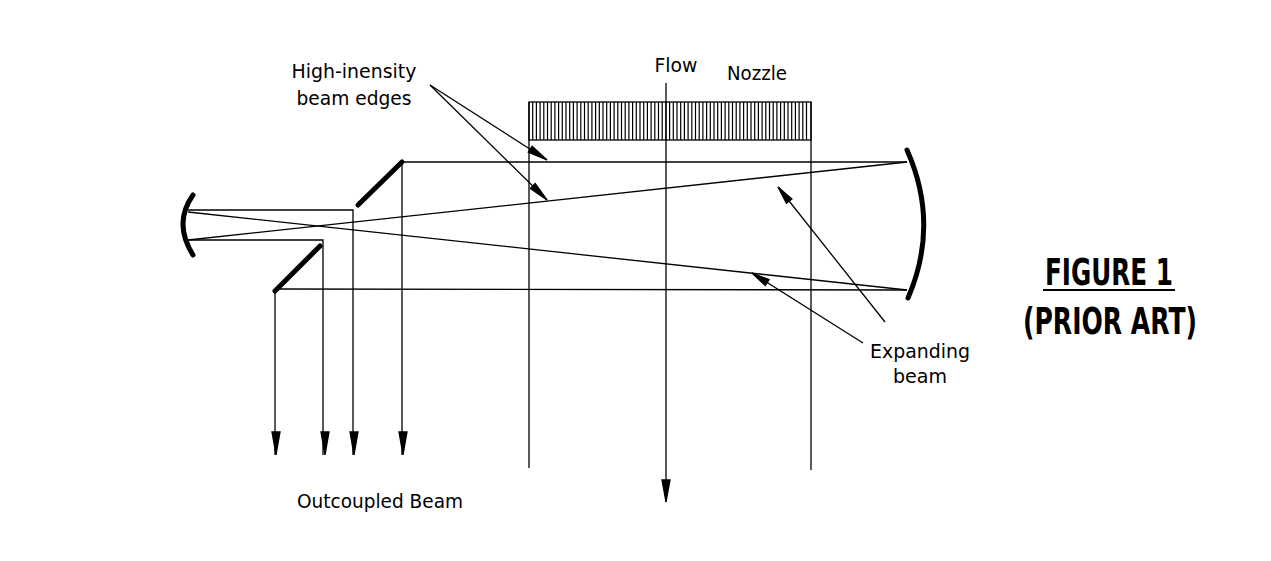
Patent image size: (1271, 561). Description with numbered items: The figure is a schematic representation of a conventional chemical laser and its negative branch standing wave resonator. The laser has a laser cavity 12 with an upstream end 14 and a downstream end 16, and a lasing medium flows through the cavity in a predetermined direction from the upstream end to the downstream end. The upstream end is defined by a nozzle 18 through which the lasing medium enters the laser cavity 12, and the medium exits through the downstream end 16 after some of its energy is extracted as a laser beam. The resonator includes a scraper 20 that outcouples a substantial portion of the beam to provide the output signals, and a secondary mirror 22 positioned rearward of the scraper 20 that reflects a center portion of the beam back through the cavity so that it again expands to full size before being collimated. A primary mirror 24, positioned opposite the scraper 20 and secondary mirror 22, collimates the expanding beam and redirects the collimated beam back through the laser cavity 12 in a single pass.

The laser cavity 12 is at (811, 420).
The upstream end 14 is at (802, 102).
The downstream end 16 is at (752, 433).
The nozzle 18 is at (788, 128).
The scraper 20 is at (385, 172).
The secondary mirror 22 is at (182, 224).
The primary mirror 24 is at (923, 262).